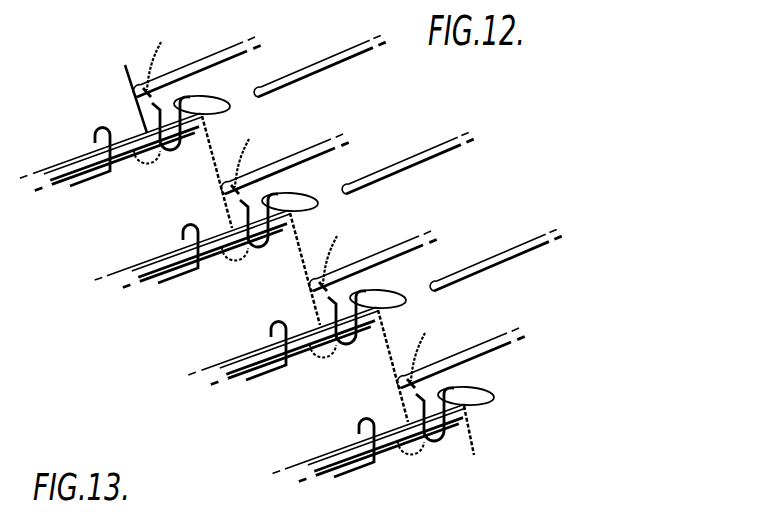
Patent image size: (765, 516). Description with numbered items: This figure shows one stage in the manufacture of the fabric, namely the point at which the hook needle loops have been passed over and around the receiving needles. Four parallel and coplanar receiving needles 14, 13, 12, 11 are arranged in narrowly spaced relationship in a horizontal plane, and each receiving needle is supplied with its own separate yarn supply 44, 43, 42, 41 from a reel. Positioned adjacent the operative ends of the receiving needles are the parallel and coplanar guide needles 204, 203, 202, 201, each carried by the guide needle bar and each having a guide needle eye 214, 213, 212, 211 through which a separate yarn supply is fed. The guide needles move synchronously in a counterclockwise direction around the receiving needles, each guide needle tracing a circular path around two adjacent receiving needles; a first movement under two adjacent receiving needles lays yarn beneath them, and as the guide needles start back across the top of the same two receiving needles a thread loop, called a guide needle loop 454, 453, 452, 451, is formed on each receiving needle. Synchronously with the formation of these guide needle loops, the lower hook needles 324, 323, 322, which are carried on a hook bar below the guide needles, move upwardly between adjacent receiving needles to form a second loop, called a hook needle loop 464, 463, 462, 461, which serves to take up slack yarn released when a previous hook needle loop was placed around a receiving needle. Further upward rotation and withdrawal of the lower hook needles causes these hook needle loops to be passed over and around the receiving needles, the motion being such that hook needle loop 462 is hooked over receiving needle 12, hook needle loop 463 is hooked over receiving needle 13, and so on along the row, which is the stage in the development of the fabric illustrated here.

The receiving needle 14 is at (58, 157).
The receiving needle 13 is at (128, 264).
The receiving needle 12 is at (208, 362).
The receiving needle 11 is at (309, 460).
The yarn supply 44 is at (84, 174).
The yarn supply 43 is at (164, 270).
The yarn supply 42 is at (244, 373).
The yarn supply 41 is at (337, 476).
The guide needle 204 is at (193, 67).
The guide needle 203 is at (329, 150).
The guide needle 202 is at (422, 246).
The guide needle 201 is at (503, 322).
The guide needle eye 214 is at (143, 45).
The guide needle eye 213 is at (250, 150).
The guide needle eye 212 is at (335, 250).
The guide needle eye 211 is at (414, 380).
The lower hook needle 324 is at (343, 38).
The lower hook needle 323 is at (424, 147).
The lower hook needle 322 is at (513, 250).
The guide needle loop 454 is at (158, 168).
The guide needle loop 453 is at (248, 264).
The guide needle loop 452 is at (335, 358).
The guide needle loop 451 is at (428, 452).
The hook needle loop 464 is at (191, 95).
The hook needle loop 463 is at (283, 194).
The hook needle loop 462 is at (372, 296).
The hook needle loop 461 is at (465, 392).